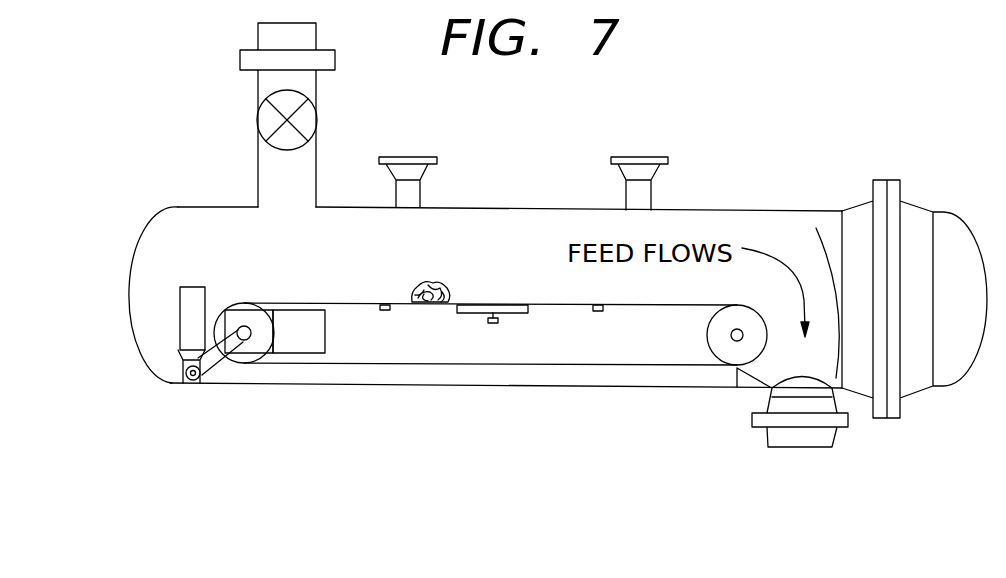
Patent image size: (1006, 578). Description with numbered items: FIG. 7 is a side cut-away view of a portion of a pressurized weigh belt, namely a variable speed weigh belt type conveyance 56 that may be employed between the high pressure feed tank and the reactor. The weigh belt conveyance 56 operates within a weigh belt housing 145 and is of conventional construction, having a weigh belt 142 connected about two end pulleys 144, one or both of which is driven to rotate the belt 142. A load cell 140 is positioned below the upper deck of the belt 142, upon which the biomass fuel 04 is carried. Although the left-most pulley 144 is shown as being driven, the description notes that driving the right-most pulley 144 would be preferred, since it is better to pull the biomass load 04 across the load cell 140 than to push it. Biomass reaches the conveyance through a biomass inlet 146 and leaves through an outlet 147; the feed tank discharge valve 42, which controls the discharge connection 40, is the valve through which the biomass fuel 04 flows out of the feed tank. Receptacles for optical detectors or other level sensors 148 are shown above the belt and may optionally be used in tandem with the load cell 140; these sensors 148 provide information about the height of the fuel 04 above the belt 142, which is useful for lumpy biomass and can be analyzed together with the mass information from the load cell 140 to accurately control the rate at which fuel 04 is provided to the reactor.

The discharge connection 40 is at (866, 0).
The feed tank discharge valve 42 is at (318, 121).
The weigh belt conveyance 56 is at (485, 246).
The biomass fuel 04 is at (466, 258).
The load cell 140 is at (493, 323).
The weigh belt 142 is at (565, 365).
The end pulleys 144 is at (244, 360).
The weigh belt housing 145 is at (718, 211).
The biomass inlet 146 is at (272, 23).
The biomass outlet 147 is at (868, 452).
The level sensors 148 is at (395, 157).